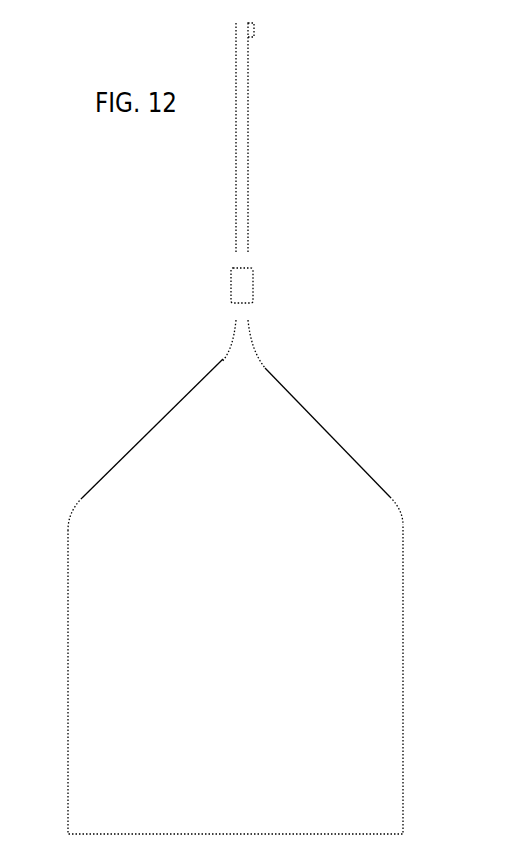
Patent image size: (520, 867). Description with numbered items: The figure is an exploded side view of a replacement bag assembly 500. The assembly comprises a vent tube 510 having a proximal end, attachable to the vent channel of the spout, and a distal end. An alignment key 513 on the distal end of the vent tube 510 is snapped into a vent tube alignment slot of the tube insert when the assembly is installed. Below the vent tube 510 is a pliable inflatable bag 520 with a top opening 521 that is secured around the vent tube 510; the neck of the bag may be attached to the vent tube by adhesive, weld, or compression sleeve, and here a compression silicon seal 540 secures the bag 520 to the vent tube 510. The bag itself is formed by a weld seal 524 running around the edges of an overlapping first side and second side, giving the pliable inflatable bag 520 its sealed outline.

The replacement bag assembly 500 is at (205, 197).
The vent tube 510 is at (270, 138).
The alignment key 513 is at (281, 36).
The pliable inflatable bag 520 is at (238, 428).
The top opening 521 is at (245, 333).
The weld seal 524 is at (404, 542).
The compression silicon seal 540 is at (253, 281).